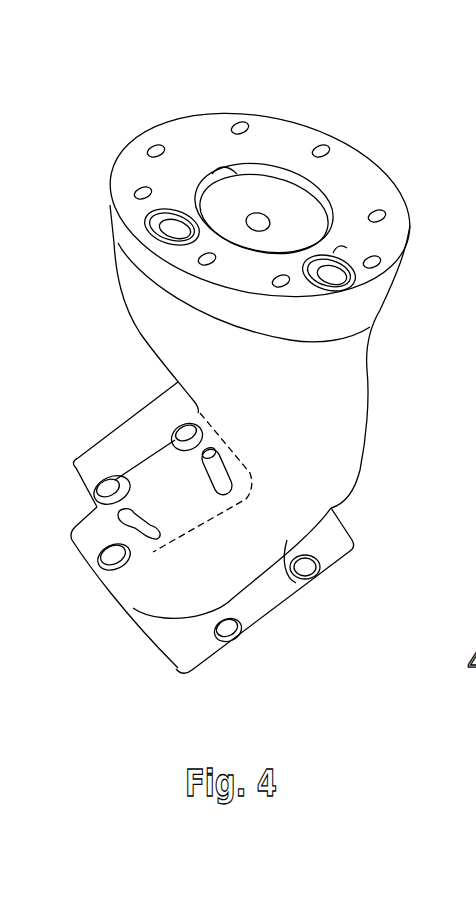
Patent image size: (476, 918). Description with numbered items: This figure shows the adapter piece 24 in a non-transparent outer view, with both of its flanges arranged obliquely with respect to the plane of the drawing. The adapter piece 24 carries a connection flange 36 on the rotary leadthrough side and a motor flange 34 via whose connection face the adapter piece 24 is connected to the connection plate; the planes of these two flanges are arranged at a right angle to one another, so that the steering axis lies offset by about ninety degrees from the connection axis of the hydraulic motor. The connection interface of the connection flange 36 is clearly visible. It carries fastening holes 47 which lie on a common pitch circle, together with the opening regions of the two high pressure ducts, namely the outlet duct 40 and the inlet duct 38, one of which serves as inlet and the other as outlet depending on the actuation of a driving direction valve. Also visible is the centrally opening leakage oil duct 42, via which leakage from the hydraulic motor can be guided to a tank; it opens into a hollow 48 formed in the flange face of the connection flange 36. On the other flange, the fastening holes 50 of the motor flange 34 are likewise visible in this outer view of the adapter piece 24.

The adapter piece 24 is at (120, 322).
The motor flange 34 is at (221, 648).
The connection flange 36 is at (283, 122).
The inlet duct 38 is at (334, 251).
The outlet duct 40 is at (170, 212).
The leakage oil duct 42 is at (258, 218).
The fastening holes 47 is at (323, 148).
The hollow 48 is at (233, 170).
The fastening holes 50 is at (300, 578).